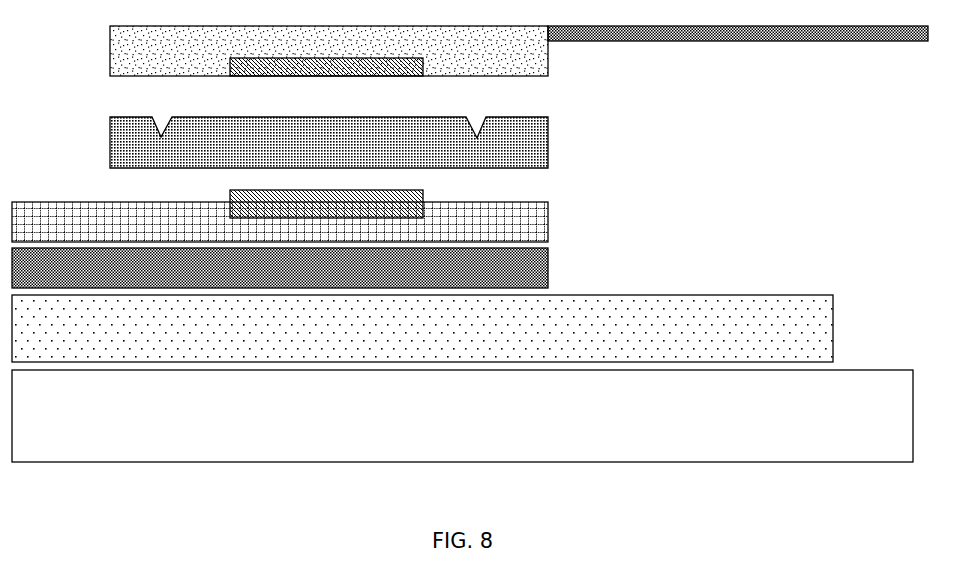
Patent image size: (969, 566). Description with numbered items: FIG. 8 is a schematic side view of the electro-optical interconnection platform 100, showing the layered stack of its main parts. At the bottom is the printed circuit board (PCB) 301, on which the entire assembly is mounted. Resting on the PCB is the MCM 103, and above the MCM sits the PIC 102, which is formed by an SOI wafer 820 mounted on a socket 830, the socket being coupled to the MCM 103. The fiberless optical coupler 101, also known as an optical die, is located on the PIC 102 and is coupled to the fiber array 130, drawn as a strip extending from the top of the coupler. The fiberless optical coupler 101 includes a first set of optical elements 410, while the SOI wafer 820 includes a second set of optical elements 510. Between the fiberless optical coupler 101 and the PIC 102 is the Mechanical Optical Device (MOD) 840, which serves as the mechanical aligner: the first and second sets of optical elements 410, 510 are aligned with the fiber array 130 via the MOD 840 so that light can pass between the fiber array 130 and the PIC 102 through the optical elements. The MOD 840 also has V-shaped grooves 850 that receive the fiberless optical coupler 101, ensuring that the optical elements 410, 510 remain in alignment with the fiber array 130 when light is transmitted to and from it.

The electro-optical interconnection platform 100 is at (470, 244).
The fiberless optical coupler 101 is at (329, 51).
The PIC 102 is at (328, 245).
The MCM 103 is at (422, 328).
The fiber array 130 is at (788, 29).
The printed circuit board (PCB) 301 is at (462, 416).
The first set of optical elements 410 is at (230, 61).
The second set of optical elements 510 is at (326, 205).
The SOI wafer 820 is at (280, 222).
The socket 830 is at (280, 268).
The Mechanical Optical Device (MOD) 840 is at (329, 142).
The V-shaped grooves 850 is at (476, 130).